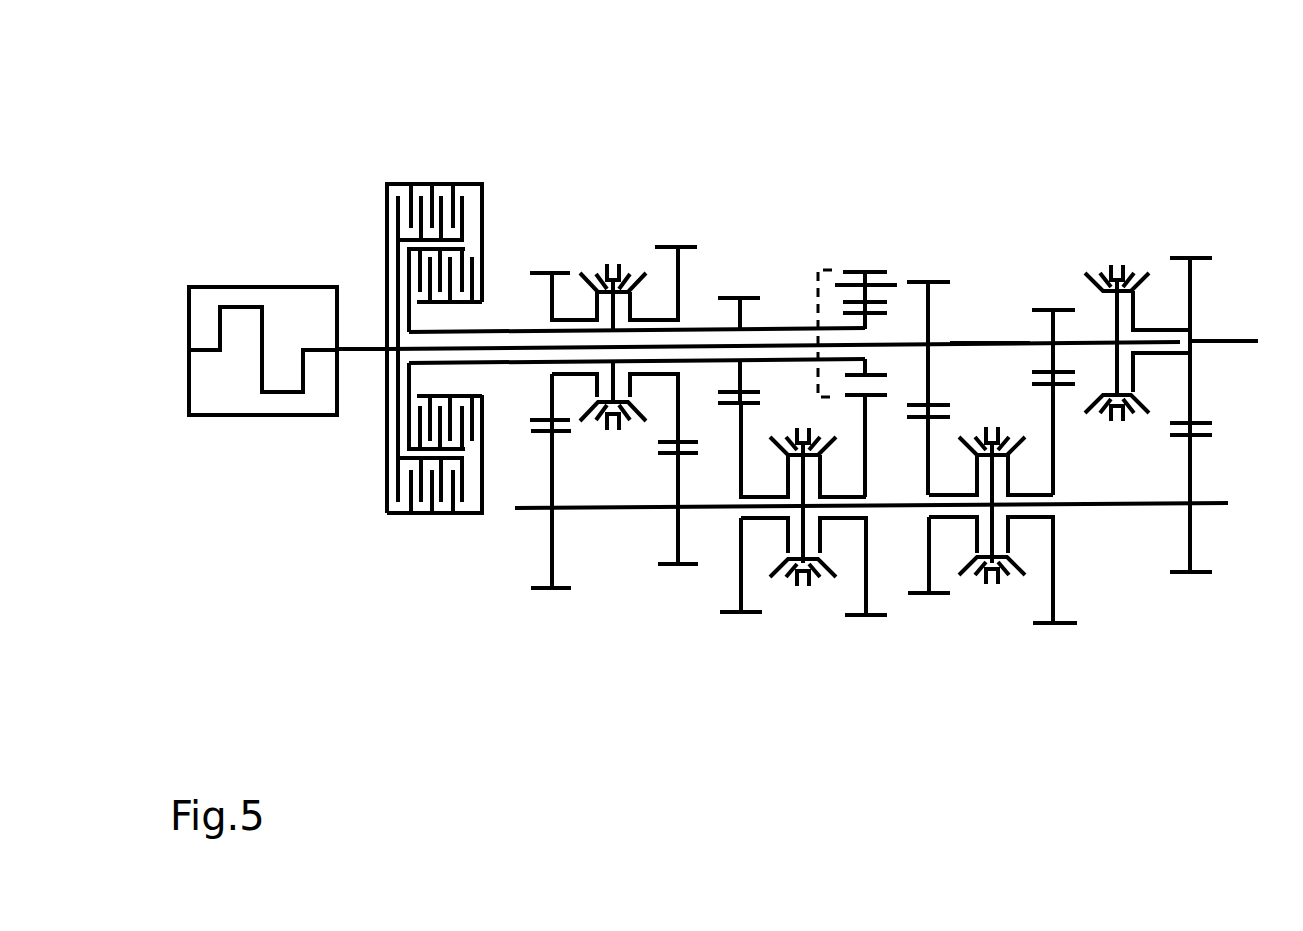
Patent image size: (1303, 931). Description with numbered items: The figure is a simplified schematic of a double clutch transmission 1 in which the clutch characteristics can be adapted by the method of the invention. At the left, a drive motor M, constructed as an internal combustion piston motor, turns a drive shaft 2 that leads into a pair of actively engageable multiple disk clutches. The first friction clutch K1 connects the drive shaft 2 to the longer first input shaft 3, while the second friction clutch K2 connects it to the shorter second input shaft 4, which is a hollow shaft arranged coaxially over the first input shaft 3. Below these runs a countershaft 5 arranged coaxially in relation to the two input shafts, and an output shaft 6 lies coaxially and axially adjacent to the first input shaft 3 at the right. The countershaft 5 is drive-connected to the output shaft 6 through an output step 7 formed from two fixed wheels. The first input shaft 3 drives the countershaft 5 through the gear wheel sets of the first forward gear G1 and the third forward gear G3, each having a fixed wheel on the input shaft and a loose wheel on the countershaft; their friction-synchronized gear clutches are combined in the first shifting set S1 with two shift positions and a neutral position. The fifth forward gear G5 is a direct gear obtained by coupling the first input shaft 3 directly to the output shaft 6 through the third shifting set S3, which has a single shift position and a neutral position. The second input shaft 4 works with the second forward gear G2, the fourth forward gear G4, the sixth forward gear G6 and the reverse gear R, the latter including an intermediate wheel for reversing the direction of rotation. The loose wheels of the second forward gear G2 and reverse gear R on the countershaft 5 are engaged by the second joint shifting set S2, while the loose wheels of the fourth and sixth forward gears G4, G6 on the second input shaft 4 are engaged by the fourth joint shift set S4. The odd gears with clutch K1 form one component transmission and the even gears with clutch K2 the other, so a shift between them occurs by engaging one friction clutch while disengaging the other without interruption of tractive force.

The double clutch transmission 1 is at (296, 665).
The drive motor M is at (262, 285).
The first friction clutch K1 is at (372, 186).
The second friction clutch K2 is at (497, 248).
The drive shaft 2 is at (360, 350).
The second input shaft 4 is at (513, 363).
The first input shaft 3 is at (977, 343).
The countershaft 5 is at (1128, 504).
The output shaft 6 is at (1227, 341).
The output step 7 is at (1190, 592).
The first shifting set S1 is at (992, 605).
The second joint shifting set S2 is at (803, 605).
The third shifting set S3 is at (1117, 241).
The fourth joint shift set S4 is at (612, 252).
The first forward gear G1 is at (1053, 289).
The second forward gear G2 is at (740, 270).
The third forward gear G3 is at (928, 261).
The fourth forward gear G4 is at (552, 606).
The fifth forward gear G5 is at (1142, 243).
The sixth forward gear G6 is at (678, 582).
The reverse gear R is at (865, 243).